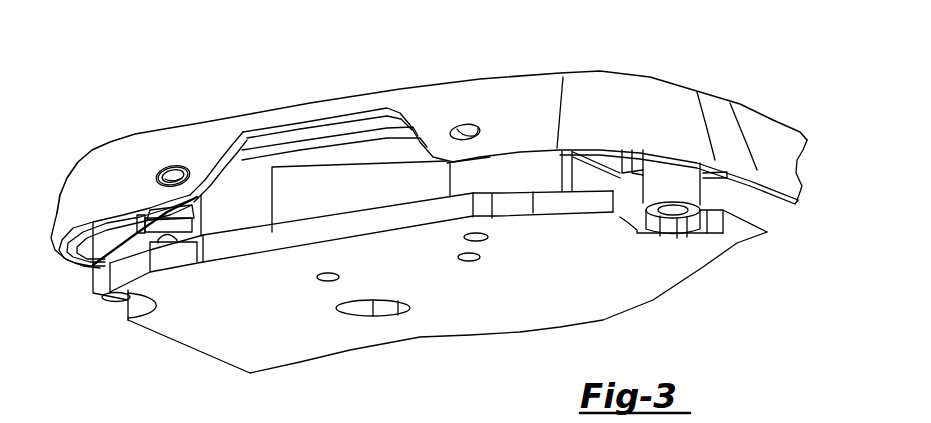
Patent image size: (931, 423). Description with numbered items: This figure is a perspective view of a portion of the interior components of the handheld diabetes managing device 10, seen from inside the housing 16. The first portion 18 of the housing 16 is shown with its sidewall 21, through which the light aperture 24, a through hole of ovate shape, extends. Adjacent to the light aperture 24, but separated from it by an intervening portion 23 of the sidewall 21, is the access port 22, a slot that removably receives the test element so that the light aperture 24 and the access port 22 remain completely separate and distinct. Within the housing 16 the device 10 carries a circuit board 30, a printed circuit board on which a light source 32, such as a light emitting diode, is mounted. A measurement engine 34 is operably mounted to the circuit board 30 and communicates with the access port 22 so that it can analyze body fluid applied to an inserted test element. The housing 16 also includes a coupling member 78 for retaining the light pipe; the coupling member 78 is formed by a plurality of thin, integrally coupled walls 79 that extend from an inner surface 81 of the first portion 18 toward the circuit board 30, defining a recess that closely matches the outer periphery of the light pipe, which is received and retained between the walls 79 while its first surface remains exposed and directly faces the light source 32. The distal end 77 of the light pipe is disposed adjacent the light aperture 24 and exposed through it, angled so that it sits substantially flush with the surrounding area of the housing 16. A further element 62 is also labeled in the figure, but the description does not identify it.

The device 10 is at (116, 86).
The housing 16 is at (764, 105).
The first portion 18 is at (790, 172).
The sidewall 21 is at (78, 182).
The access port 22 is at (331, 124).
The intervening portion 23 is at (200, 172).
The light aperture 24 is at (170, 166).
The circuit board 30 is at (583, 200).
The light source 32 is at (163, 242).
The measurement engine 34 is at (405, 190).
The tab 62 is at (200, 203).
The distal end 77 is at (180, 167).
The coupling member 78 is at (230, 215).
The walls 79 is at (138, 229).
The inner surface 81 is at (265, 156).